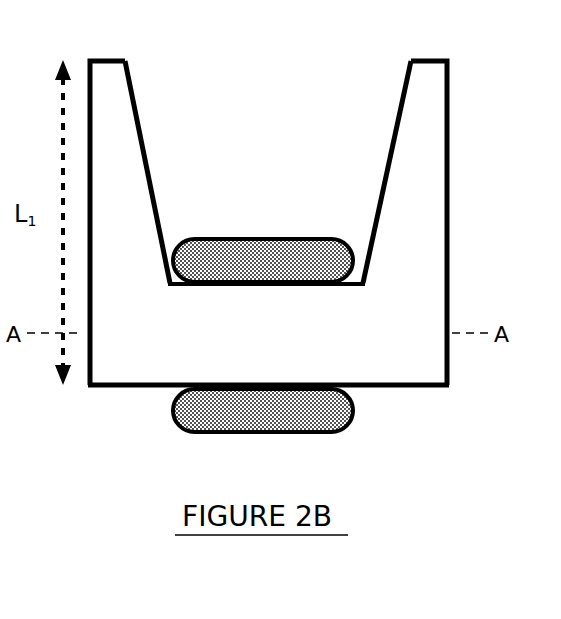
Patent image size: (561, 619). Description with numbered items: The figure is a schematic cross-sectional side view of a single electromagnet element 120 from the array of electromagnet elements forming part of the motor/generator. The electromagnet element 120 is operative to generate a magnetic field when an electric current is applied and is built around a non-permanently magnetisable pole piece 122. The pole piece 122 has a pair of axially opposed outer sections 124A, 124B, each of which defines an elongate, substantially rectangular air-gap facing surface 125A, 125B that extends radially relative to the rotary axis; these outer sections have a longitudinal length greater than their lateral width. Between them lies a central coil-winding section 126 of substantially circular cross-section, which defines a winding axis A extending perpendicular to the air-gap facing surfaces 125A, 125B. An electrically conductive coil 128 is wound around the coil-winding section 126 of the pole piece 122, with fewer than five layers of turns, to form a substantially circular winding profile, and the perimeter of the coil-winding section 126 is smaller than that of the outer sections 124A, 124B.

The electromagnet element 120 is at (293, 240).
The pole piece 122 is at (115, 390).
The outer section 124A is at (142, 129).
The outer section 124B is at (392, 130).
The air-gap facing surface 125A is at (88, 110).
The air-gap facing surface 125B is at (449, 206).
The coil-winding section 126 is at (357, 270).
The electrically conductive coil 128 is at (353, 421).